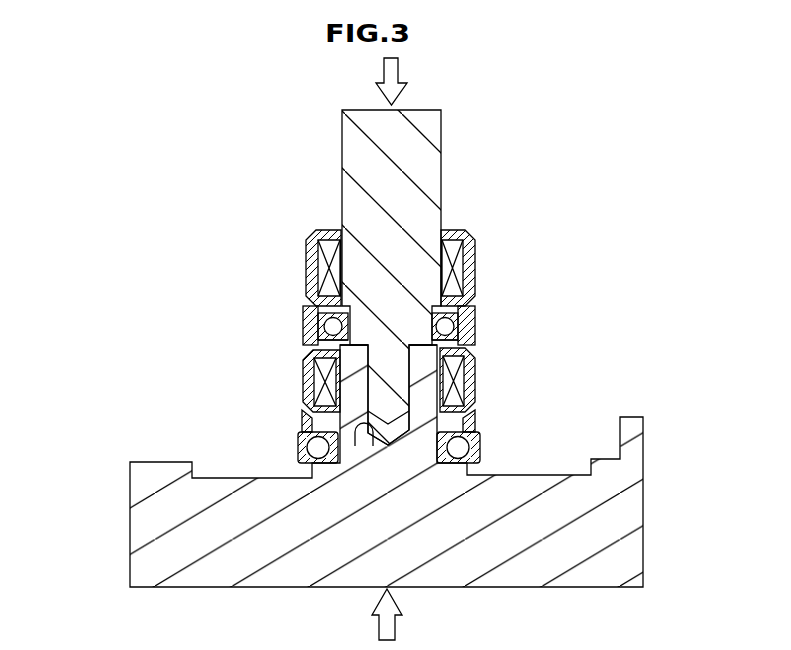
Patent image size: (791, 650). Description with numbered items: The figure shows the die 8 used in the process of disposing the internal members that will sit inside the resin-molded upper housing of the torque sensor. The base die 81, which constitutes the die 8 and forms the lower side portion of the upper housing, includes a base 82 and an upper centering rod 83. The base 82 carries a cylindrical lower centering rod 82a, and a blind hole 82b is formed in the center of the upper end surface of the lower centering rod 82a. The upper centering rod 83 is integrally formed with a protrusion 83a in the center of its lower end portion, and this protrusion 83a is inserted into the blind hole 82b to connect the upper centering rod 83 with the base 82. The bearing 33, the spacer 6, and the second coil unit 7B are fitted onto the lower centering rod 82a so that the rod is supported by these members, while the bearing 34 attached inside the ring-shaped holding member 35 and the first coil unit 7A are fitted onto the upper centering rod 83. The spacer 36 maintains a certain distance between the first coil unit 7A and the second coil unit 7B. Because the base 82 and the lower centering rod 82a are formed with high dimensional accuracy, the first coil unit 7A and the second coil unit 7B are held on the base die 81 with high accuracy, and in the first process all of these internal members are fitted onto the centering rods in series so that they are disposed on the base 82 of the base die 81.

The die 8 is at (183, 140).
The upper centering rod 83 is at (341, 182).
The protrusion 83a is at (387, 362).
The base die 81 is at (275, 312).
The base 82 is at (130, 527).
The lower centering rod 82a is at (352, 392).
The blind hole 82b is at (355, 447).
The first coil unit 7A is at (480, 247).
The second coil unit 7B is at (478, 384).
The spacer 36 is at (485, 308).
The bearing 34 is at (446, 327).
The ring-shaped holding member 35 is at (477, 337).
The spacer 6 is at (475, 423).
The bearing 33 is at (460, 447).